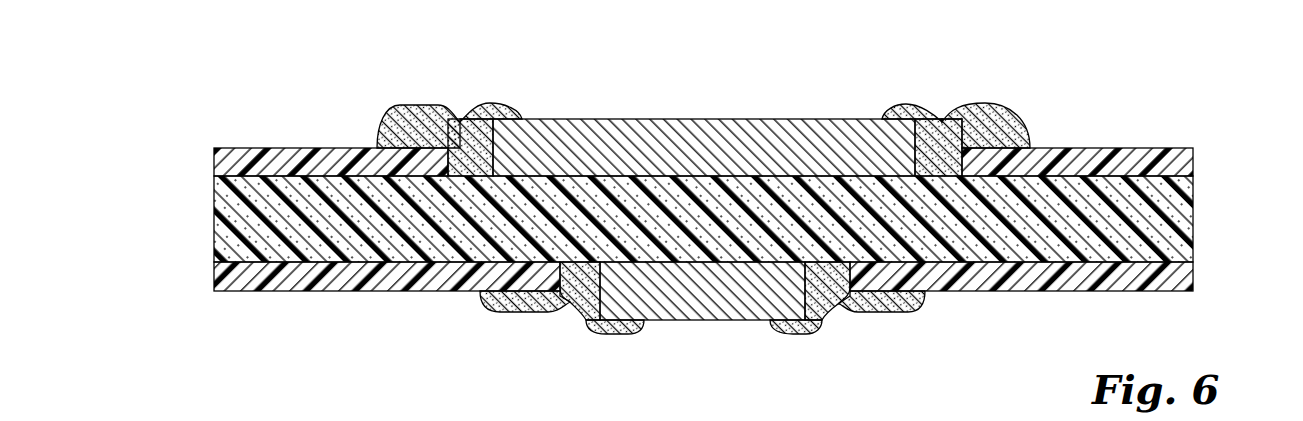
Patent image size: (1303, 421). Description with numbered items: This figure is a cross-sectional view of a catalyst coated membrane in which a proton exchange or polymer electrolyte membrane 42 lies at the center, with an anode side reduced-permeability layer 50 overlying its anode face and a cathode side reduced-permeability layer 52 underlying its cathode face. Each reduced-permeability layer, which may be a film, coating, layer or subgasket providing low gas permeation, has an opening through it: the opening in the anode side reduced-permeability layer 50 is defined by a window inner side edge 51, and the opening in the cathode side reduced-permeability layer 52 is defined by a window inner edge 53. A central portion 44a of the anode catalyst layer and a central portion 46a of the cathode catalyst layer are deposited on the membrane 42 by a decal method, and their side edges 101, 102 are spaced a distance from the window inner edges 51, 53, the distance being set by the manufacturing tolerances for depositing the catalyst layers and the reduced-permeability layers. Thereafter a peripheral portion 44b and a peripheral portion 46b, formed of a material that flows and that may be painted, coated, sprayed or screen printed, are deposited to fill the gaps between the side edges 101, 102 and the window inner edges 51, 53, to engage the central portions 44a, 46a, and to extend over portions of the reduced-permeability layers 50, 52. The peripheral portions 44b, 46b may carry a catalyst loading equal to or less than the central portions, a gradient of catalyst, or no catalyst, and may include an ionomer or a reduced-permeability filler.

The proton exchange or polymer electrolyte membrane 42 is at (1194, 215).
The anode side reduced-permeability layer 50 is at (278, 146).
The cathode side reduced-permeability layer 52 is at (331, 292).
The window inner side edge 51 is at (457, 118).
The window inner edge 53 is at (565, 306).
The central portion of the anode catalyst layer 44a is at (738, 118).
The peripheral portion of the anode catalyst layer 44b is at (508, 95).
The central portion of the cathode catalyst layer 46a is at (715, 322).
The peripheral portion of the cathode catalyst layer 46b is at (489, 318).
The side edge of the anode central portion 101 is at (458, 117).
The solder joint 102 is at (816, 330).